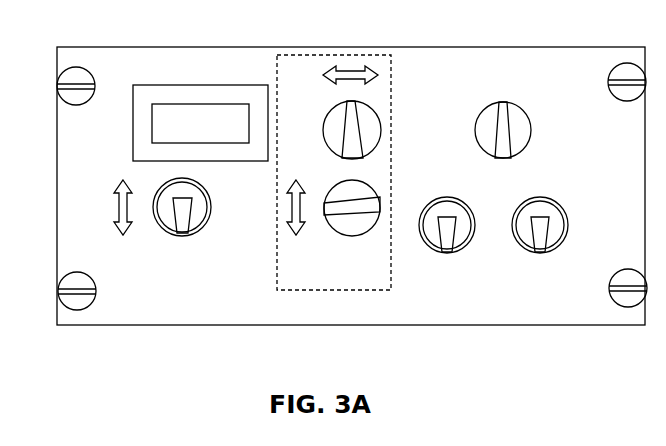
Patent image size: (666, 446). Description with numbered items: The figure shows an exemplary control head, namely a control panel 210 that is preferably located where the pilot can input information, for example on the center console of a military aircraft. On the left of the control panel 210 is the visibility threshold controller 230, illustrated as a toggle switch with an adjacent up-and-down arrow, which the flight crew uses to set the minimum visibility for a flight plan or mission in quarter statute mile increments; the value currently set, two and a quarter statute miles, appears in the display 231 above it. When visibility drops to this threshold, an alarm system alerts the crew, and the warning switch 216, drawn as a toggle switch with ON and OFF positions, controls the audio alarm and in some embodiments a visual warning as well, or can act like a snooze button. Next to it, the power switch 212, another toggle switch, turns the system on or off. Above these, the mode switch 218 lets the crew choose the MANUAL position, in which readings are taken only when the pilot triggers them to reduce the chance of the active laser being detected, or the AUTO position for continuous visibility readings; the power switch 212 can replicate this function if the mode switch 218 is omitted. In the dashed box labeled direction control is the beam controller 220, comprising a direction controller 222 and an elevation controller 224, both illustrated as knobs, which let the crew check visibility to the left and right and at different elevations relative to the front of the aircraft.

The control panel 210 is at (57, 190).
The power switch 212 is at (570, 220).
The warning switch 216 is at (465, 247).
The mode switch 218 is at (527, 113).
The beam controller 220 is at (370, 151).
The direction controller 222 is at (328, 115).
The elevation controller 224 is at (330, 187).
The visibility threshold controller 230 is at (202, 228).
The display 231 is at (160, 93).